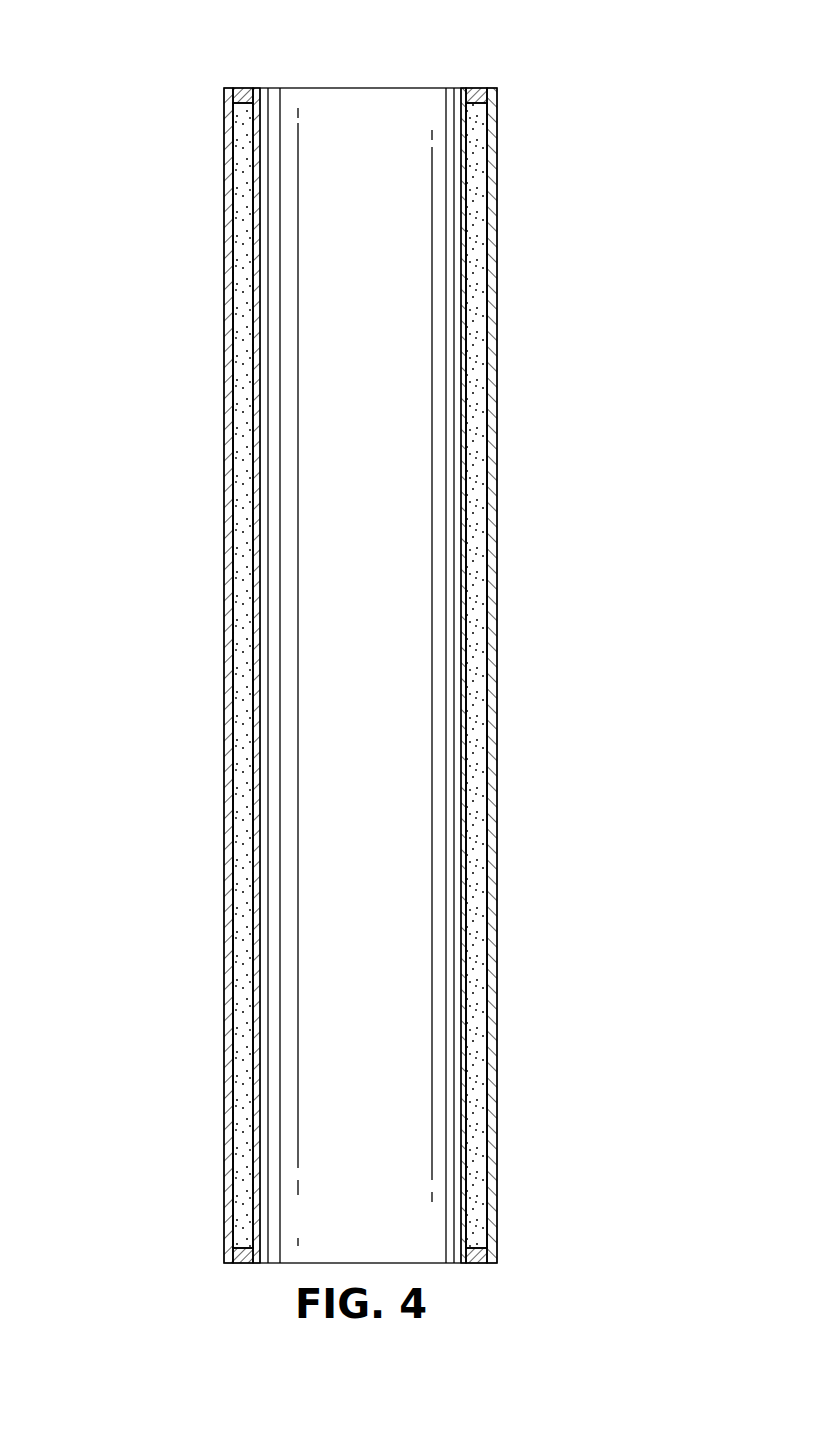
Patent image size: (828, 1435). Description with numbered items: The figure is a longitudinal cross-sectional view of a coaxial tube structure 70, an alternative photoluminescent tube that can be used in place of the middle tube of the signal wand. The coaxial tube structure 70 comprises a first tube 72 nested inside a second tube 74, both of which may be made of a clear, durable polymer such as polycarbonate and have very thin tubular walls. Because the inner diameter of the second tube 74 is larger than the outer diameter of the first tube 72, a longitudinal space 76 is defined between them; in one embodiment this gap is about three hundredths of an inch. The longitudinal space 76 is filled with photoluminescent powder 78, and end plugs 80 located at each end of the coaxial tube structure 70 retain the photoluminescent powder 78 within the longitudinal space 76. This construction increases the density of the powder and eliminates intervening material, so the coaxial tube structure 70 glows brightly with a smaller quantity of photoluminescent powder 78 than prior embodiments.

The coaxial tube structure 70 is at (553, 182).
The first tube 72 is at (462, 247).
The second tube 74 is at (488, 290).
The longitudinal space 76 is at (478, 356).
The photoluminescent powder 78 is at (245, 595).
The end plugs 80 is at (489, 100).